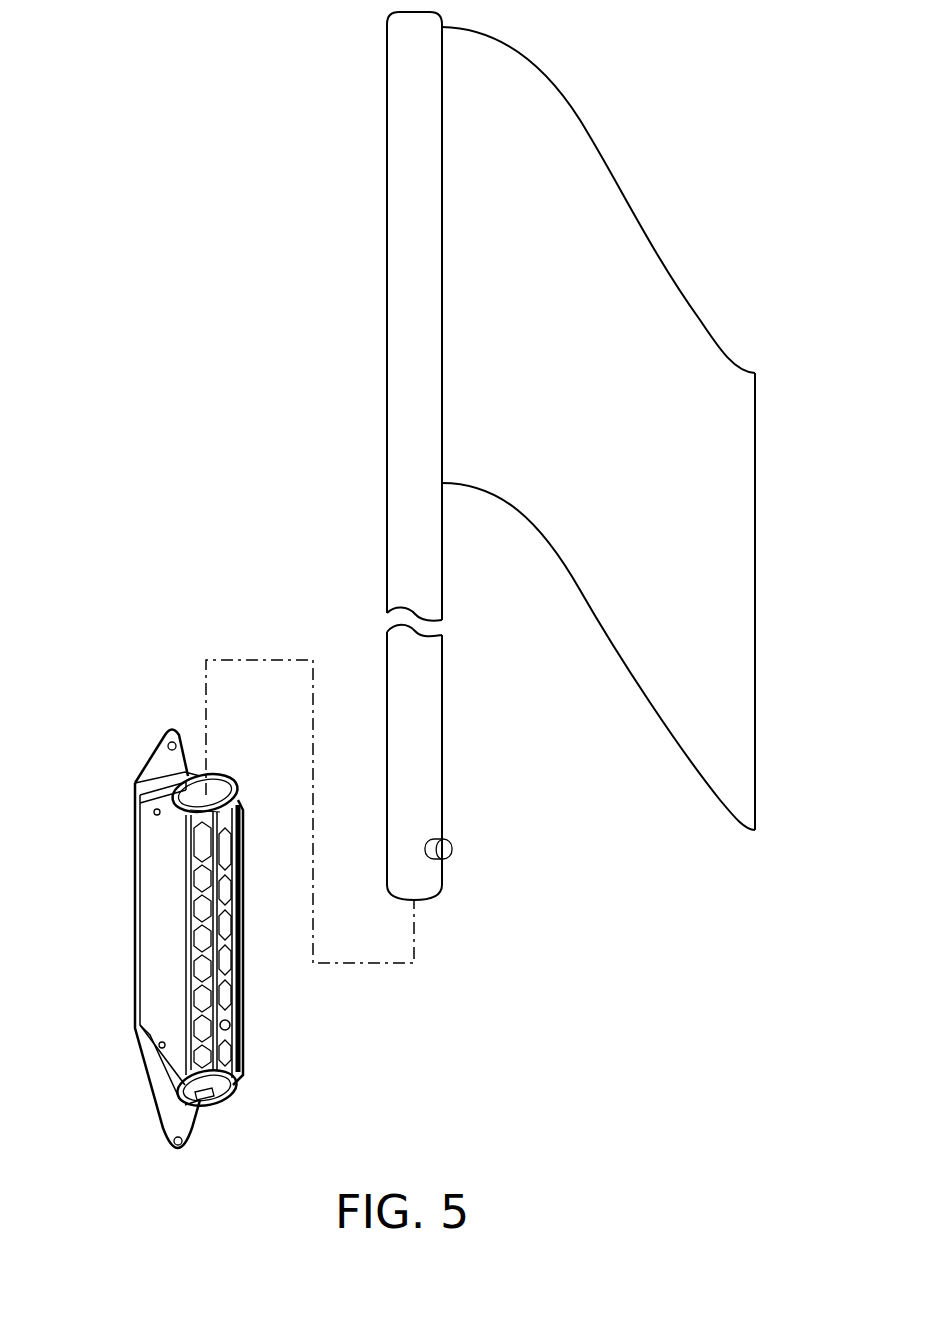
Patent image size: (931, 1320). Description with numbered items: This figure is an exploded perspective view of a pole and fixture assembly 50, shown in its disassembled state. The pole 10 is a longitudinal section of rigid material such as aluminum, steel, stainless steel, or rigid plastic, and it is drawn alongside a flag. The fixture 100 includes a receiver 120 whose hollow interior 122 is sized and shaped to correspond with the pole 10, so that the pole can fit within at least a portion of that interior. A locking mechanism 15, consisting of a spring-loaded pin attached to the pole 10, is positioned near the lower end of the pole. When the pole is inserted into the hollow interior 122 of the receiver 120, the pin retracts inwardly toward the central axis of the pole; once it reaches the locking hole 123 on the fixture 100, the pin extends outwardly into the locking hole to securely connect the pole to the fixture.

The pole 10 is at (410, 707).
The locking mechanism 15 is at (450, 851).
The pole and fixture assembly 50 is at (199, 284).
The fixture 100 is at (190, 907).
The receiver 120 is at (218, 781).
The hollow interior 122 is at (197, 797).
The locking hole 123 is at (230, 1028).